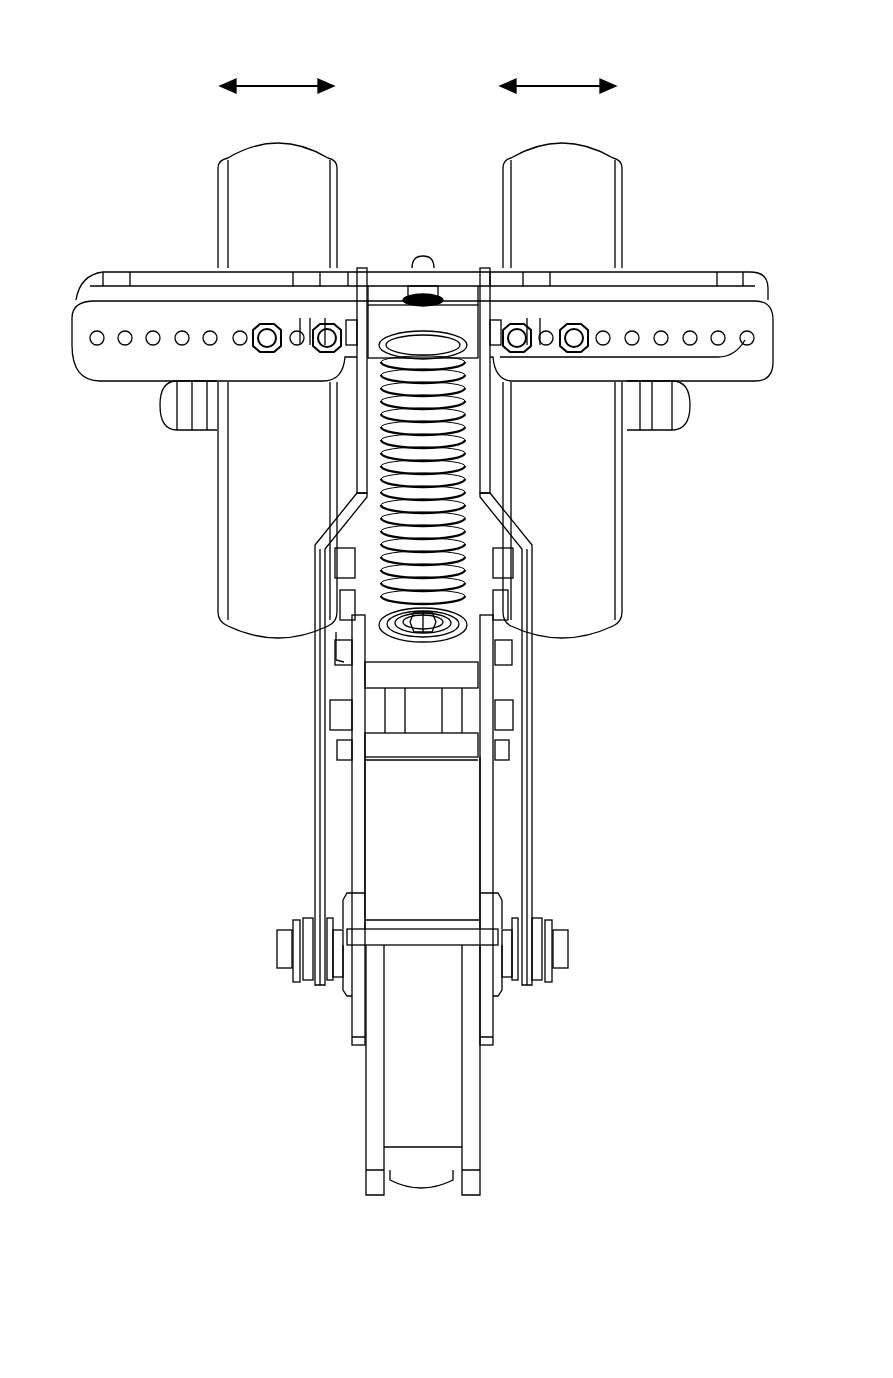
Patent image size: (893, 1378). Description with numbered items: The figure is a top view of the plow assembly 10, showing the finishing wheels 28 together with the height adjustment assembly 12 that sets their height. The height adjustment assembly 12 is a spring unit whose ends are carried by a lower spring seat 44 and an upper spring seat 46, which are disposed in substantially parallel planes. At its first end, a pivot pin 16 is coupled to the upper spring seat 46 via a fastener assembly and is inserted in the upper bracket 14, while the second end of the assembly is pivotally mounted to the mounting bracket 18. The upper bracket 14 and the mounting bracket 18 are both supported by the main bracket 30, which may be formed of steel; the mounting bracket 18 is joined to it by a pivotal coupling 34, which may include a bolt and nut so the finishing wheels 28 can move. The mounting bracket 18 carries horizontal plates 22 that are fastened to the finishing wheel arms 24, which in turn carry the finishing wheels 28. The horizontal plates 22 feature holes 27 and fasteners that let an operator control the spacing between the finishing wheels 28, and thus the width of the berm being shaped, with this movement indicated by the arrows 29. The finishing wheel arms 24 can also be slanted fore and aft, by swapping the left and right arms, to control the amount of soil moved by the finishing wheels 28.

The plow assembly 10 is at (112, 188).
The height adjustment assembly 12 is at (402, 496).
The upper bracket 14 is at (488, 722).
The pivot pin 16 is at (496, 668).
The mounting bracket 18 is at (527, 823).
The horizontal plates 22 is at (682, 314).
The finishing wheel arms 24 is at (664, 424).
The holes 27 is at (720, 335).
The finishing wheels 28 is at (341, 233).
The arrows 29 is at (278, 85).
The main bracket 30 is at (477, 1084).
The pivotal coupling 34 is at (283, 950).
The lower spring seat 44 is at (410, 333).
The upper spring seat 46 is at (396, 640).